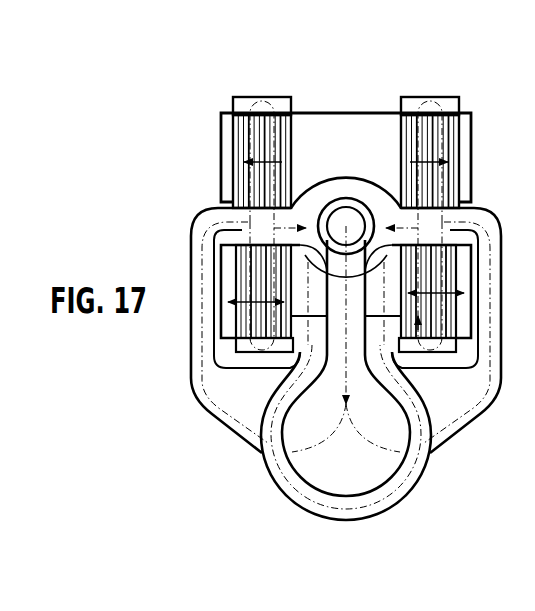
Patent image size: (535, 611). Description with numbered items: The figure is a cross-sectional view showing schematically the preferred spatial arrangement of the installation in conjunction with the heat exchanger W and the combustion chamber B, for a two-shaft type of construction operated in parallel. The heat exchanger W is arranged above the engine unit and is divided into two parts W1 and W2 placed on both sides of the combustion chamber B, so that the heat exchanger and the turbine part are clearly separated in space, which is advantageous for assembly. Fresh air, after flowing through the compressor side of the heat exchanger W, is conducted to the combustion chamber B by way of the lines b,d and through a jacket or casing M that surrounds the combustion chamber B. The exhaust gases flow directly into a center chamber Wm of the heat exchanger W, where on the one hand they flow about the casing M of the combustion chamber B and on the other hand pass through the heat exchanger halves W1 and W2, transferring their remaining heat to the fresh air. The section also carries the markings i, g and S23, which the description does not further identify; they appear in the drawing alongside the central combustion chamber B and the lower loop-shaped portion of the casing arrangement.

The heat exchanger W is at (400, 80).
The heat exchanger part W1 is at (234, 157).
The heat exchanger part W2 is at (457, 131).
The center chamber Wm is at (344, 112).
The jacket or casing M is at (337, 178).
The combustion chamber B is at (353, 197).
The inner air gap i is at (326, 305).
The air gap g is at (363, 300).
The lines b,d is at (198, 338).
The armature loop S23 is at (395, 437).